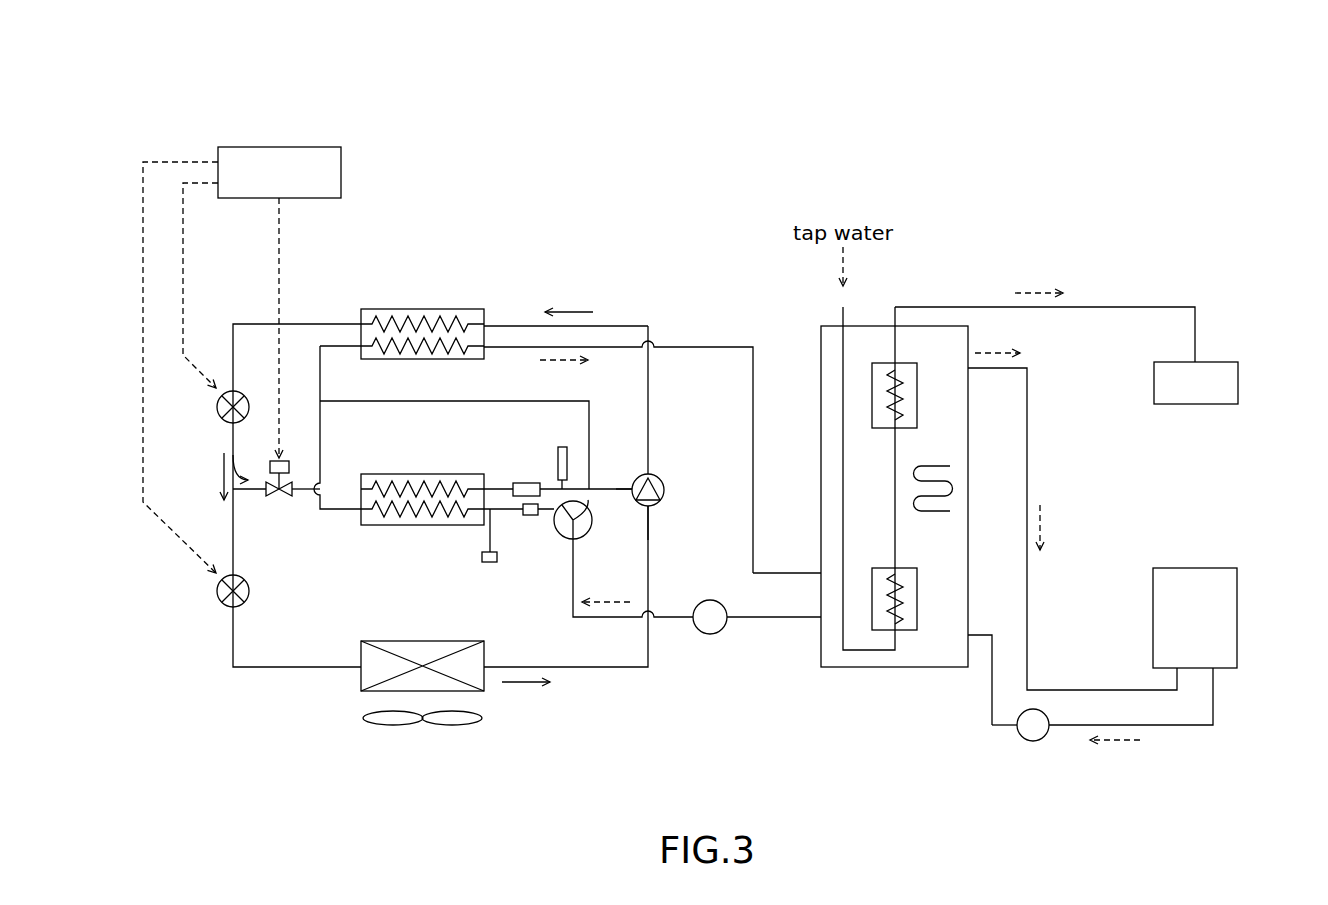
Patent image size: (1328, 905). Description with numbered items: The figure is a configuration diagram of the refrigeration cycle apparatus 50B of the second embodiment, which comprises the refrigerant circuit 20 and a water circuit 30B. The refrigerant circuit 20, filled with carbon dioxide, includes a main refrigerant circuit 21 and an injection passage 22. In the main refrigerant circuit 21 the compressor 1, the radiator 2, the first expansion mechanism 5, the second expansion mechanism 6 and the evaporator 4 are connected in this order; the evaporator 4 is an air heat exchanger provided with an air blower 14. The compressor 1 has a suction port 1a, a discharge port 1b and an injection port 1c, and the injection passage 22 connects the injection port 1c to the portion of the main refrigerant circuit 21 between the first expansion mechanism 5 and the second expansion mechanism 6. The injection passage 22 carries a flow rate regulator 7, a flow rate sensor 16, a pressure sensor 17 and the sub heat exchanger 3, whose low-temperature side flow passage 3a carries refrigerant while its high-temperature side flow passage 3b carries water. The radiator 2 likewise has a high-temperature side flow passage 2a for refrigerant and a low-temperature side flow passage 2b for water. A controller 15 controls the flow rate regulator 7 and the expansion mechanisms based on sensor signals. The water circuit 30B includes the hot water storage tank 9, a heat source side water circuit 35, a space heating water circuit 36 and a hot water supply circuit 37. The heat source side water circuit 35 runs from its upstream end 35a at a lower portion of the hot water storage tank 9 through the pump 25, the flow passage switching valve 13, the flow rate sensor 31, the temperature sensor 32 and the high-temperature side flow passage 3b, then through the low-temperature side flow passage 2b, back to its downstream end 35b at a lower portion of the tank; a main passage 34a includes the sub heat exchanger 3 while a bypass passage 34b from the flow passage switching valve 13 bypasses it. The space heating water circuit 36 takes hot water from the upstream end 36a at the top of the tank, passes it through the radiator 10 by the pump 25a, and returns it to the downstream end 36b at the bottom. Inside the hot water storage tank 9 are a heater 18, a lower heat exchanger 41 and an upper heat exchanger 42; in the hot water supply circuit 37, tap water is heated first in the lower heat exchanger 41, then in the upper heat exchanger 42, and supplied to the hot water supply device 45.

The compressor 1 is at (670, 482).
The suction port 1a is at (657, 504).
The discharge port 1b is at (660, 479).
The injection port 1c is at (636, 480).
The radiator 2 is at (412, 306).
The high-temperature side flow passage 2a is at (448, 330).
The low-temperature side flow passage 2b is at (440, 350).
The sub heat exchanger 3 is at (414, 527).
The low-temperature side flow passage 3a is at (418, 486).
The high-temperature side flow passage 3b is at (440, 520).
The evaporator 4 is at (380, 641).
The first expansion mechanism 5 is at (220, 412).
The second expansion mechanism 6 is at (220, 597).
The flow rate regulator 7 is at (289, 461).
The hot water storage tank 9 is at (821, 355).
The radiator 10 is at (1213, 568).
The flow passage switching valve 13 is at (585, 535).
The air blower 14 is at (466, 724).
The controller 15 is at (305, 147).
The flow rate sensor 16 is at (526, 483).
The pressure sensor 17 is at (563, 447).
The heater 18 is at (935, 465).
The refrigerant circuit 20 is at (600, 670).
The main refrigerant circuit 21 is at (614, 326).
The injection passage 22 is at (500, 487).
The pump 25 is at (710, 634).
The pump 25a is at (1024, 740).
The water circuit 30B is at (985, 248).
The flow rate sensor 31 is at (530, 517).
The temperature sensor 32 is at (490, 562).
The main passage 34a is at (324, 512).
The bypass passage 34b is at (395, 400).
The heat source side water circuit 35 is at (683, 344).
The upstream end 35a is at (820, 630).
The downstream end 35b is at (821, 568).
The space heating water circuit 36 is at (1163, 729).
The upstream end 36a is at (968, 372).
The downstream end 36b is at (968, 633).
The hot water supply circuit 37 is at (1130, 303).
The lower heat exchanger 41 is at (917, 612).
The upper heat exchanger 42 is at (917, 386).
The hot water supply device 45 is at (1238, 383).
The refrigeration cycle apparatus 50B is at (530, 243).